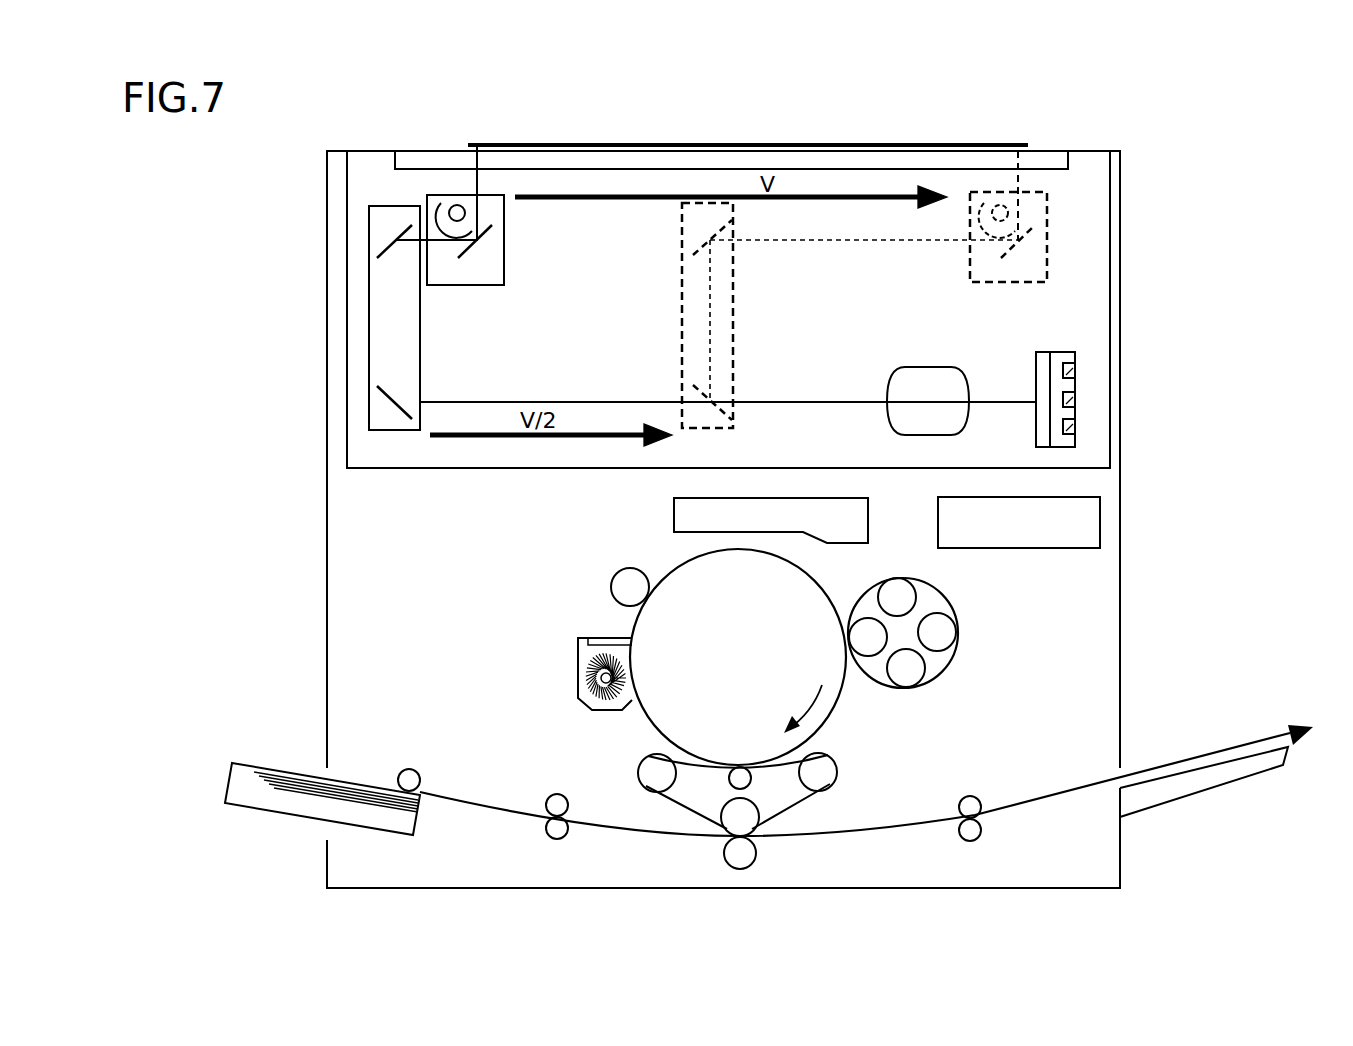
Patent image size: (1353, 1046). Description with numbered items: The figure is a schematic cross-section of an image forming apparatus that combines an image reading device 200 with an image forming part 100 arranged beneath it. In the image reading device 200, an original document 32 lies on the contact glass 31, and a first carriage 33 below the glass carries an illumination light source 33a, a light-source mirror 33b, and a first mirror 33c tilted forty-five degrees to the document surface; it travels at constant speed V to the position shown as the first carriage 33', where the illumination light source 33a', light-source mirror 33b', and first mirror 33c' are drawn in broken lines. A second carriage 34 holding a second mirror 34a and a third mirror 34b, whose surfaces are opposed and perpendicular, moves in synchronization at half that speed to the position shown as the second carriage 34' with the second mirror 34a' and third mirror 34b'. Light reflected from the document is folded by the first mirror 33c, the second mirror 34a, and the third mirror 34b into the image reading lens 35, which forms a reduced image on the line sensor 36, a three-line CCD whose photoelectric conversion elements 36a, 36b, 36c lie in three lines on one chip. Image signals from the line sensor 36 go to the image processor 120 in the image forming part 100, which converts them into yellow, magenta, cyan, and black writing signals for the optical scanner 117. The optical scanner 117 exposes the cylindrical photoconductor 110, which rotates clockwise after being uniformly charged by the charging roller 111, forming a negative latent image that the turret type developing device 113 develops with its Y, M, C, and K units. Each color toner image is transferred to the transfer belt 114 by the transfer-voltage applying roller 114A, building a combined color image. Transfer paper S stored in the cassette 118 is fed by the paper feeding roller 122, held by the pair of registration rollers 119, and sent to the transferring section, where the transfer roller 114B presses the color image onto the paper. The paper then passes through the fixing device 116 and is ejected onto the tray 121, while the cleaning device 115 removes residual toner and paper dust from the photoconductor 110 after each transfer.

The contact glass 31 is at (408, 162).
The original document 32 is at (535, 143).
The first carriage 33 is at (427, 238).
The illumination light source 33a is at (523, 213).
The light-source mirror 33b is at (365, 204).
The first mirror 33c is at (527, 247).
The second carriage 34 is at (374, 318).
The second mirror 34a is at (335, 264).
The third mirror 34b is at (335, 379).
The first carriage (moved position) 33' is at (1038, 265).
The illumination light source (moved position) 33a' is at (1092, 218).
The light-source mirror (moved position) 33b' is at (949, 220).
The first mirror (moved position) 33c' is at (1096, 248).
The second carriage (moved position) 34' is at (756, 315).
The second mirror (moved position) 34a' is at (762, 258).
The third mirror (moved position) 34b' is at (762, 388).
The image reading lens 35 is at (928, 382).
The line sensor 36 is at (1111, 379).
The photoelectric conversion element 36a is at (1076, 370).
The photoelectric conversion element 36b is at (1076, 399).
The photoelectric conversion element 36c is at (1076, 427).
The image reading device 200 is at (1072, 195).
The image forming part 100 is at (1100, 688).
The photoconductor 110 is at (760, 669).
The charging roller 111 is at (628, 586).
The developing device 113 is at (935, 603).
The transfer belt 114 is at (789, 814).
The transfer-voltage applying roller 114A is at (742, 780).
The transfer roller 114B is at (745, 853).
The cleaning device 115 is at (578, 658).
The fixing device 116 is at (975, 806).
The optical scanner 117 is at (685, 518).
The cassette 118 is at (322, 801).
The pair of registration rollers 119 is at (548, 828).
The image processor 120 is at (1090, 518).
The tray 121 is at (1200, 778).
The paper feeding roller 122 is at (410, 770).
The transfer paper S is at (364, 786).